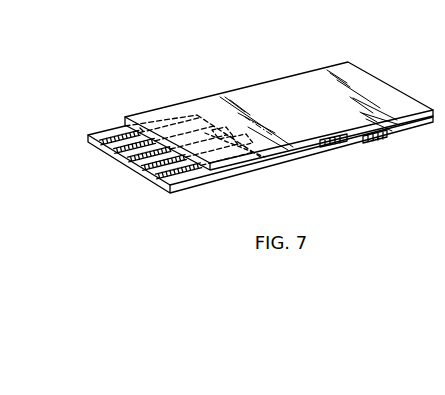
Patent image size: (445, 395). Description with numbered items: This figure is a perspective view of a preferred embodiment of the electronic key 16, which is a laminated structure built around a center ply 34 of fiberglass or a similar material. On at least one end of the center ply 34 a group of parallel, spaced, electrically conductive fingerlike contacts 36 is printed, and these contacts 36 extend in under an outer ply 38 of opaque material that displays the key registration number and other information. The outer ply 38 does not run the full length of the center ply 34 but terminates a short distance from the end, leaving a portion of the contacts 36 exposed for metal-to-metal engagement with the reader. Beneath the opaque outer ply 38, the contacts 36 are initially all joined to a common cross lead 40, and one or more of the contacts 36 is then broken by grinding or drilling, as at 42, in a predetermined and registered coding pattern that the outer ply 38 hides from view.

The key 16 is at (261, 71).
The center ply 34 is at (413, 123).
The fingerlike contacts 36 is at (113, 133).
The outer ply 38 is at (320, 70).
The common cross lead 40 is at (213, 127).
The break 42 is at (199, 139).